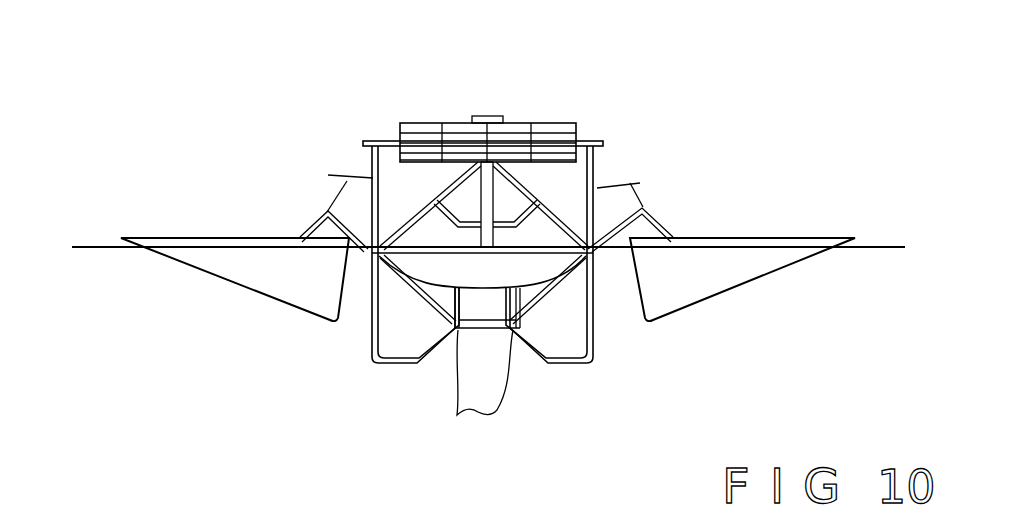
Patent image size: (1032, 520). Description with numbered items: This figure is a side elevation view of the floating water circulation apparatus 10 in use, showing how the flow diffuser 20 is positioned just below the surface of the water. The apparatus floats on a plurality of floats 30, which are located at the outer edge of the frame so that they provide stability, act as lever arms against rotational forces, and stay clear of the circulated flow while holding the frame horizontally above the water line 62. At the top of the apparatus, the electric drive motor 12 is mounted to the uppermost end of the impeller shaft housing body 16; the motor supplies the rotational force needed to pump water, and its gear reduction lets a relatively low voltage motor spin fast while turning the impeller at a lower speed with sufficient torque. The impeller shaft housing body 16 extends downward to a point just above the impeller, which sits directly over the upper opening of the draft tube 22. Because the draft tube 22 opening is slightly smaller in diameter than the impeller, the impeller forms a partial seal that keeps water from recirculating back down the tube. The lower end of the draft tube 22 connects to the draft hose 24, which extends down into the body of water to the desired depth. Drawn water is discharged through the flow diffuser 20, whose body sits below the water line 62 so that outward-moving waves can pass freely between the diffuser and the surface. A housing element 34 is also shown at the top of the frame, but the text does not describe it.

The floating water circulation apparatus 10 is at (775, 310).
The electric drive motor 12 is at (490, 113).
The impeller shaft housing body 16 is at (487, 198).
The flow diffuser 20 is at (430, 267).
The draft tube 22 is at (497, 305).
The draft hose 24 is at (477, 382).
The floats 30 is at (203, 237).
The motor housing 34 is at (418, 122).
The water line 62 is at (92, 243).